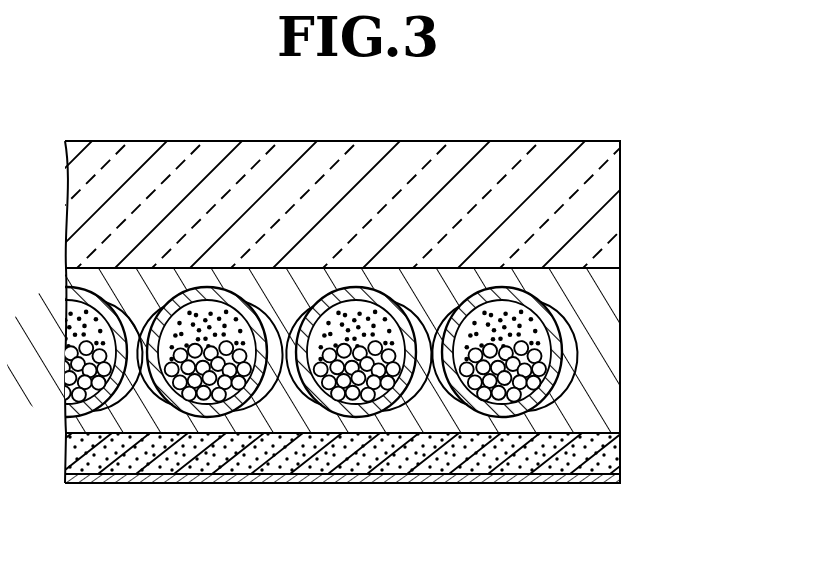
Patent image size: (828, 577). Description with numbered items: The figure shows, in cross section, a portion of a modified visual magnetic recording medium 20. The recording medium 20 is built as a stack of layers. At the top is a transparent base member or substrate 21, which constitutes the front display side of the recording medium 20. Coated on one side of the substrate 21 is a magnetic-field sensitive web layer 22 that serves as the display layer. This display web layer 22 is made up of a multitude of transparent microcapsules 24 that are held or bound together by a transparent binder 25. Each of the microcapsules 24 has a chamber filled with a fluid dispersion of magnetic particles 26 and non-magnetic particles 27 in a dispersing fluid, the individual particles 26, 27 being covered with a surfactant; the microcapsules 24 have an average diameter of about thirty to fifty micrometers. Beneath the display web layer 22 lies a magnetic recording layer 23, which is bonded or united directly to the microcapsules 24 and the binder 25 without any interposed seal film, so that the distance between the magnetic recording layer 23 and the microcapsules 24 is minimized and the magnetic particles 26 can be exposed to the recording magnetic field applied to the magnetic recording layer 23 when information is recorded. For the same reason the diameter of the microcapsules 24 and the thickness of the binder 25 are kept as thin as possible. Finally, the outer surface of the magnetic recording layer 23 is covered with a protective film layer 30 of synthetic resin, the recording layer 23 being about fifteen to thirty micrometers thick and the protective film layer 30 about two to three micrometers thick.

The visual magnetic recording medium 20 is at (686, 168).
The transparent base member or substrate 21 is at (620, 218).
The magnetic-field sensitive web layer 22 is at (620, 355).
The magnetic recording layer 23 is at (620, 452).
The transparent microcapsules 24 is at (495, 298).
The transparent binder 25 is at (284, 282).
The magnetic particles 26 is at (195, 313).
The non-magnetic particles 27 is at (213, 400).
The protective film layer 30 is at (611, 483).